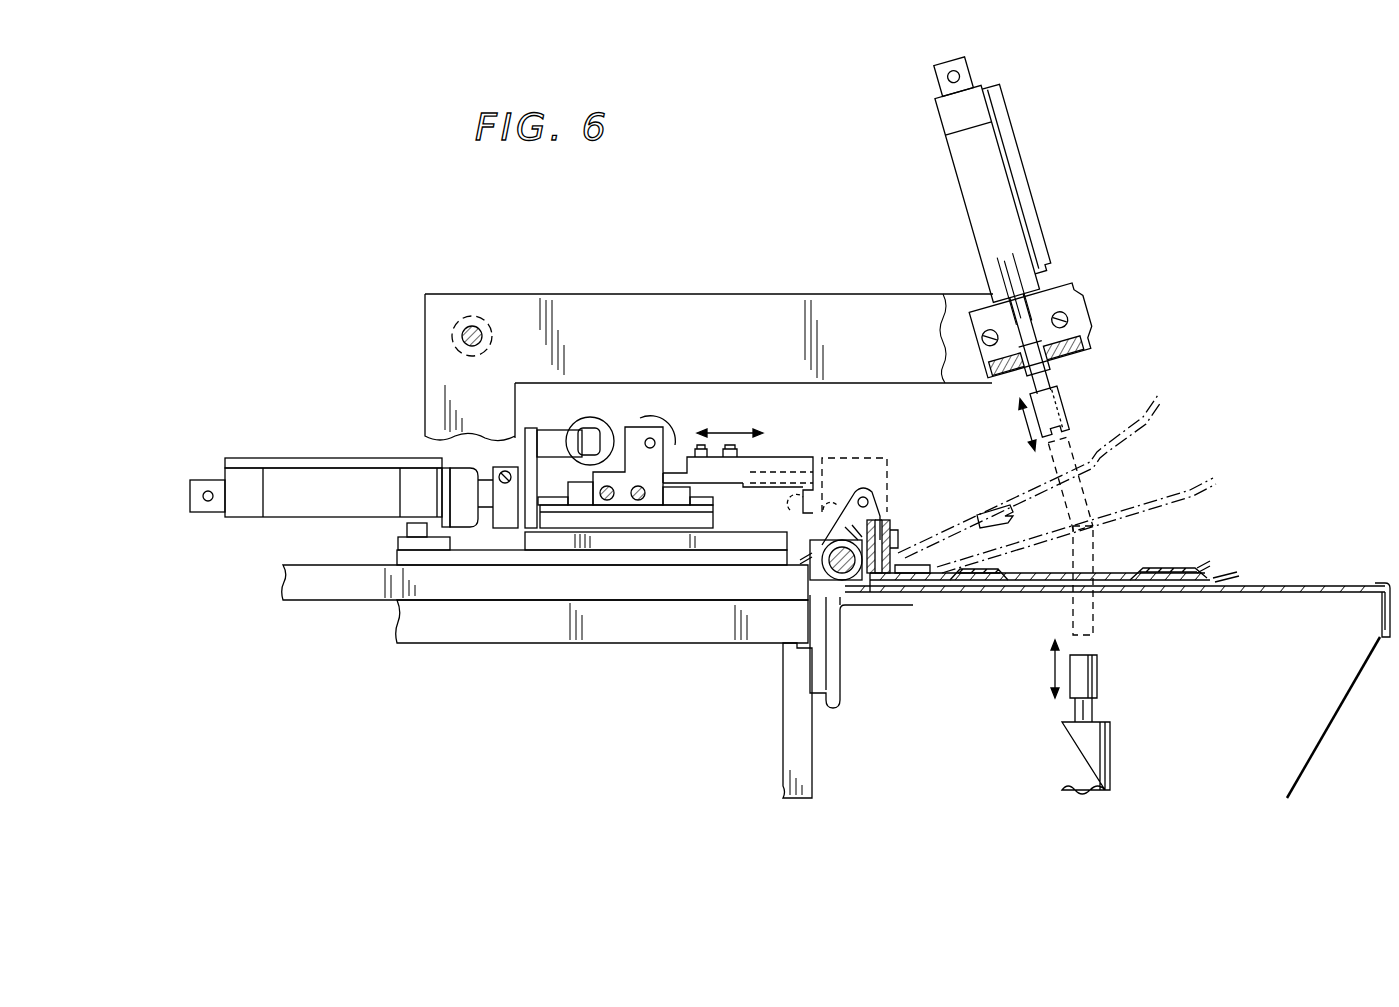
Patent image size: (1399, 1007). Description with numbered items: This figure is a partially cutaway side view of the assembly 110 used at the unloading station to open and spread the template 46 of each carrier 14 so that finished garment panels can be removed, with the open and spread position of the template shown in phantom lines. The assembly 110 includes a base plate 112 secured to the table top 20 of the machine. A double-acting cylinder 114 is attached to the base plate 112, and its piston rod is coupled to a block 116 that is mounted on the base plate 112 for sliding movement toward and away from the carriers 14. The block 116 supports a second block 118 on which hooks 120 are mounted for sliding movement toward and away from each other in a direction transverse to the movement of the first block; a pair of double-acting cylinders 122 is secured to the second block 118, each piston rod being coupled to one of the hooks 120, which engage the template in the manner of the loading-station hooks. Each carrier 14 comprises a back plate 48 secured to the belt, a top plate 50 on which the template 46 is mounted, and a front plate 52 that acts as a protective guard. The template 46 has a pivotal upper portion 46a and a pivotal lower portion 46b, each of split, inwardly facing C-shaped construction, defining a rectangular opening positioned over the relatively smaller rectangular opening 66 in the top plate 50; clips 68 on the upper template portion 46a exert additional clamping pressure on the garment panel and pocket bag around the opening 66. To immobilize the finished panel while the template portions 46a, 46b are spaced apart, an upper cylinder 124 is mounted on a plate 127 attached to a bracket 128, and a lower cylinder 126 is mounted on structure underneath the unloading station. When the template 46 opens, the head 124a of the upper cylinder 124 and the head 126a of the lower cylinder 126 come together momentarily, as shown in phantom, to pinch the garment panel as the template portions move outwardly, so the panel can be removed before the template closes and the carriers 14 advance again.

The carrier 14 is at (1380, 583).
The table top 20 is at (378, 590).
The template 46 is at (1222, 564).
The upper template portion 46a is at (1200, 566).
The lower template portion 46b is at (1235, 573).
The back plate 48 is at (802, 752).
The top plate 50 is at (1320, 585).
The front plate 52 is at (1333, 725).
The opening 66 is at (1088, 597).
The clips 68 is at (1008, 578).
The assembly 110 is at (862, 440).
The base plate 112 is at (400, 557).
The double-acting cylinder 114 is at (308, 490).
The block 116 is at (508, 537).
The second block 118 is at (700, 518).
The hooks 120 is at (765, 458).
The double-acting cylinders 122 is at (660, 422).
The upper cylinder 124 is at (980, 165).
The head 124a is at (1052, 405).
The lower cylinder 126 is at (1095, 752).
The head 126a is at (1092, 675).
The plate 127 is at (1085, 352).
The bracket 128 is at (645, 315).